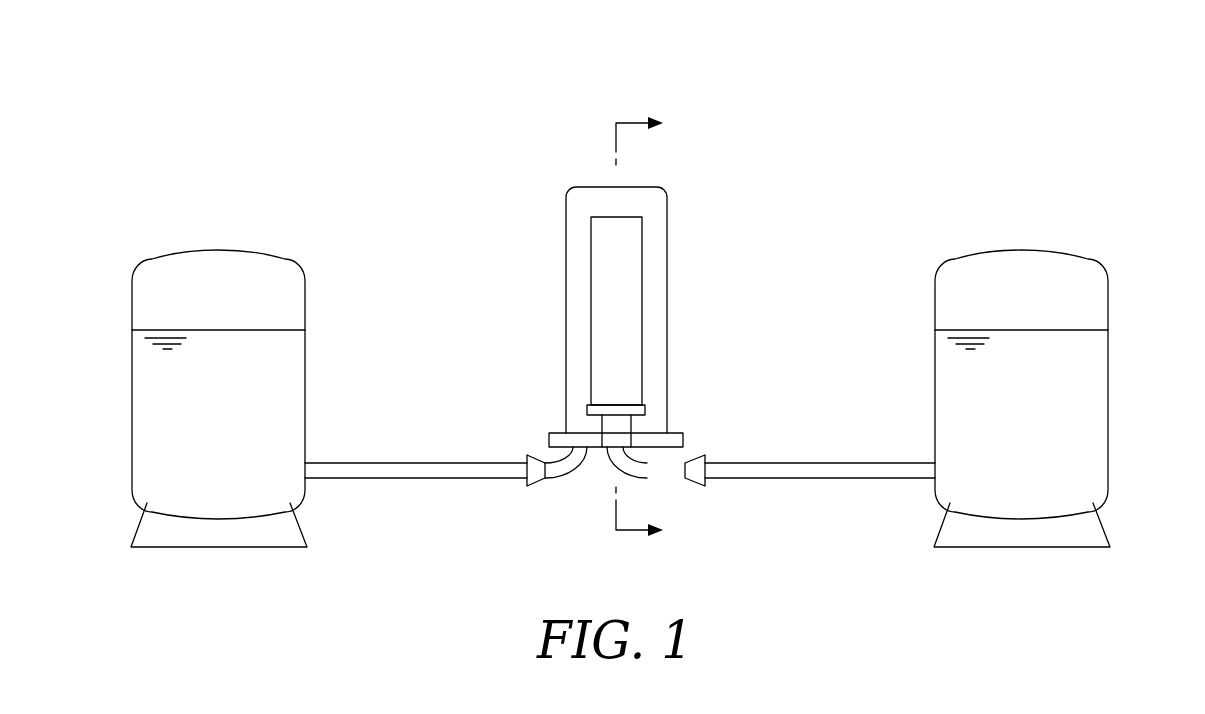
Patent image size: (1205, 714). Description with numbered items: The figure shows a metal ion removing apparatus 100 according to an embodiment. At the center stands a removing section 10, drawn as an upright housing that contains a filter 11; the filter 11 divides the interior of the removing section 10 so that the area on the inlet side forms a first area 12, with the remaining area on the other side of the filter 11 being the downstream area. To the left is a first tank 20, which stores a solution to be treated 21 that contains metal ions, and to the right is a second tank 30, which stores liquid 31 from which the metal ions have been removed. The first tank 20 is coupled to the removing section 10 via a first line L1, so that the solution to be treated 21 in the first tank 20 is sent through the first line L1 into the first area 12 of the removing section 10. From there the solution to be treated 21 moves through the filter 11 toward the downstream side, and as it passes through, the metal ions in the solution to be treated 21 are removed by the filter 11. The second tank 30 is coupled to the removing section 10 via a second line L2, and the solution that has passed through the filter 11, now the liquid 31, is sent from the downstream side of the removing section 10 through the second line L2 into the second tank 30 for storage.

The metal ion removing apparatus 100 is at (922, 130).
The removing section 10 is at (610, 317).
The filter 11 is at (642, 272).
The first area 12 is at (578, 312).
The first tank 20 is at (178, 398).
The solution to be treated 21 is at (160, 418).
The second tank 30 is at (1063, 398).
The liquid 31 is at (1080, 417).
The first line L1 is at (397, 463).
The second line L2 is at (810, 463).